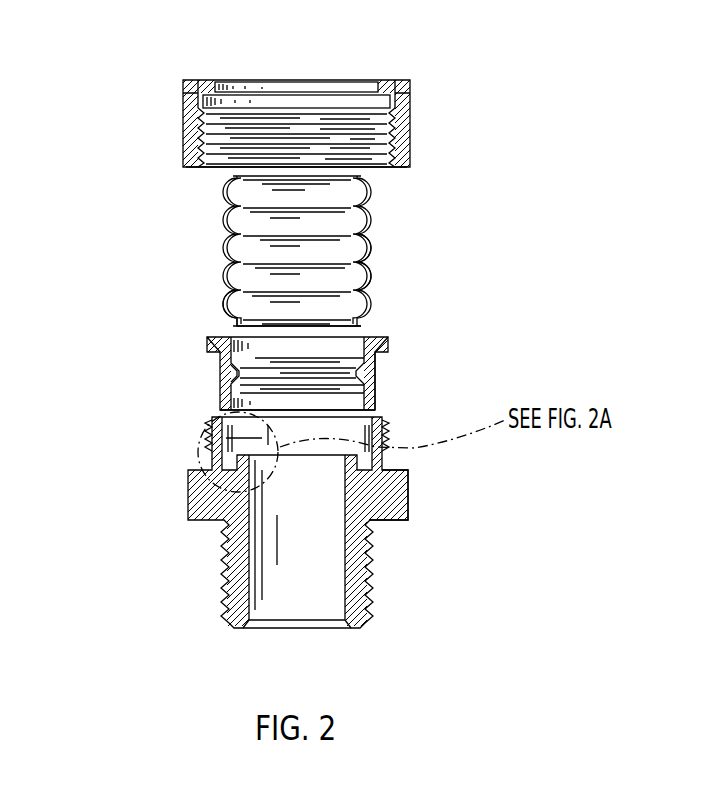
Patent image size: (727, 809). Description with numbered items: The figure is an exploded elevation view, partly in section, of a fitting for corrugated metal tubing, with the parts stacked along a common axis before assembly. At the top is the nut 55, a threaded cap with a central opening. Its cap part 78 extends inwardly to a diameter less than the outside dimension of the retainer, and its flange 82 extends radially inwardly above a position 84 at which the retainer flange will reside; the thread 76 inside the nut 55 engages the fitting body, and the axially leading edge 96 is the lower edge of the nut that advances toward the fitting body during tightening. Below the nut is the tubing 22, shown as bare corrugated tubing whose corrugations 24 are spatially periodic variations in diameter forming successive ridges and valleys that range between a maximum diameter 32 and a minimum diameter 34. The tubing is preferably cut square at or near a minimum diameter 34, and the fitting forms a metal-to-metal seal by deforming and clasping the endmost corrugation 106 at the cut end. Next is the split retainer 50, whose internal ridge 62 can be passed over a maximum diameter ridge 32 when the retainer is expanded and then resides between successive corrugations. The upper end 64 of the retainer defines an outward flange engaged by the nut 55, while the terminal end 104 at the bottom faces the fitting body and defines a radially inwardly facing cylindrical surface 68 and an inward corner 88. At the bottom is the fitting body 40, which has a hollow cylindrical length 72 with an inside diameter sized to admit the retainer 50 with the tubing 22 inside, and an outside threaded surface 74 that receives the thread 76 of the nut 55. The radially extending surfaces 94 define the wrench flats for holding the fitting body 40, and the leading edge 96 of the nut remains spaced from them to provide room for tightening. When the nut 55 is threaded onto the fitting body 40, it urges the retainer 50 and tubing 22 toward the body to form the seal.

The tubing 22 is at (378, 212).
The corrugations 24 is at (228, 250).
The maximum diameter 32 is at (380, 272).
The minimum diameter 34 is at (380, 263).
The fitting body 40 is at (399, 535).
The split retainer 50 is at (393, 361).
The nut 55 is at (396, 119).
The ridge 62 is at (222, 375).
The end 64 is at (208, 338).
The cylindrical surface 68 is at (378, 396).
The hollow cylindrical length 72 is at (205, 440).
The threaded surface 74 is at (393, 446).
The thread 76 is at (200, 133).
The cap part 78 is at (183, 80).
The flange 82 is at (392, 80).
The position 84 is at (202, 100).
The inward corner 88 is at (217, 411).
The radially extending surfaces 94 is at (402, 462).
The axially leading edge 96 is at (404, 164).
The terminal end 104 is at (220, 400).
The endmost corrugation 106 is at (225, 302).